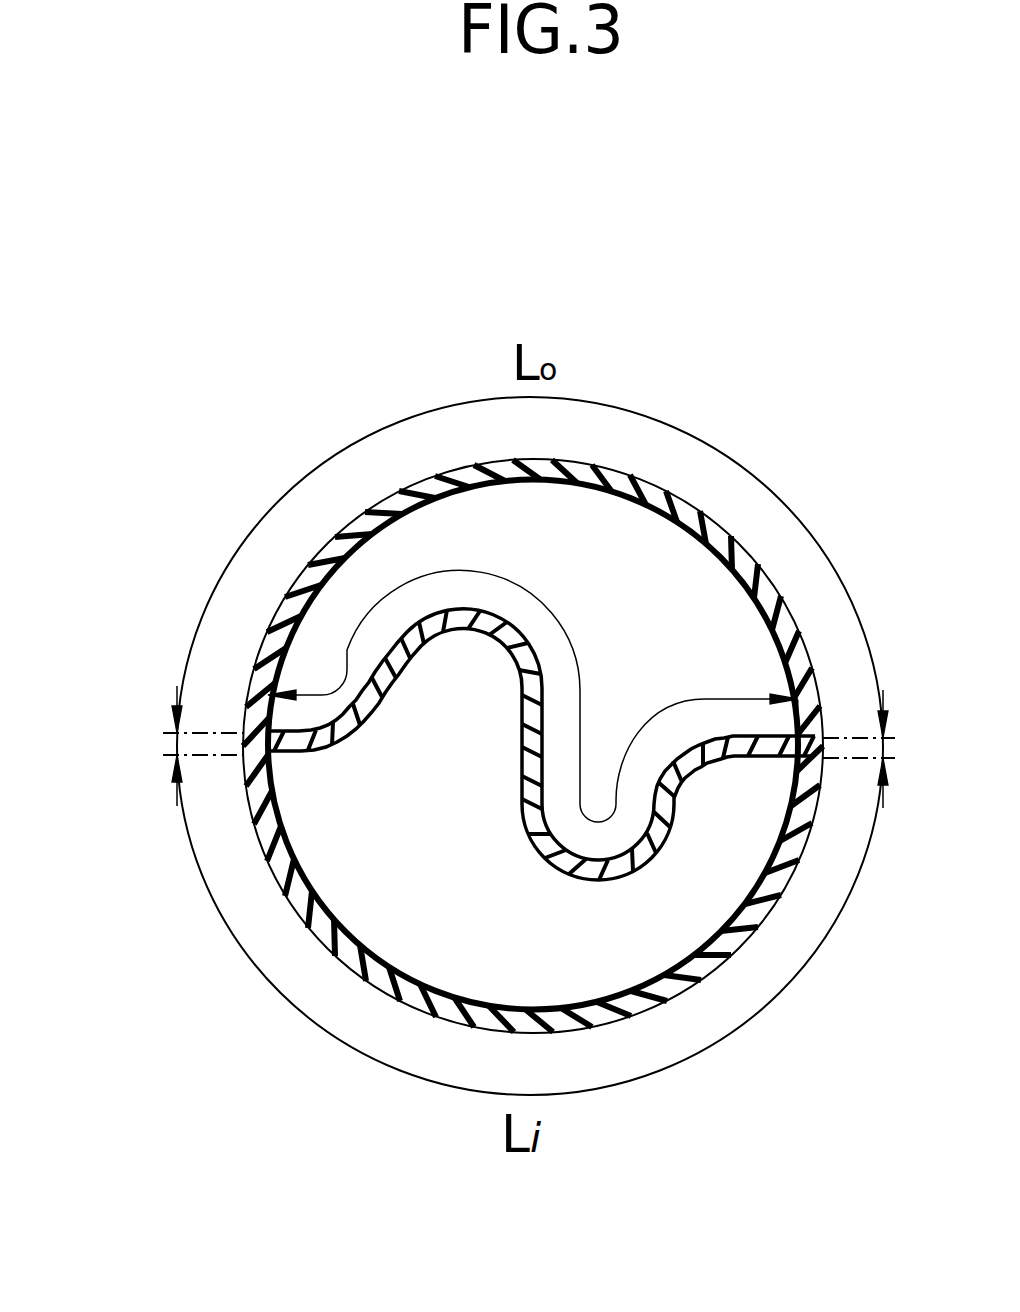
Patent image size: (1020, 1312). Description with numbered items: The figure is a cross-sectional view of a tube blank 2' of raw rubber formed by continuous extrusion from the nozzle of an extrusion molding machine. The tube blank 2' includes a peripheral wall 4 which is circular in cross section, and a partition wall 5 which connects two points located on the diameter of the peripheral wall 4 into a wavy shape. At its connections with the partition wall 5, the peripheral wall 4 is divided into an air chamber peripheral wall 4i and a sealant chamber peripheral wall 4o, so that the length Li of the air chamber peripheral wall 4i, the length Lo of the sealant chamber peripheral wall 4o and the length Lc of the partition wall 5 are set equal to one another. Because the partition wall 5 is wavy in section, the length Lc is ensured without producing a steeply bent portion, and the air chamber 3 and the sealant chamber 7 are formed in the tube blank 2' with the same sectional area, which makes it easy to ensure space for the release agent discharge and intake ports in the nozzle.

The tube blank 2' is at (530, 732).
The air chamber 3 is at (510, 940).
The peripheral wall 4 is at (432, 746).
The sealant chamber peripheral wall 4o is at (270, 620).
The air chamber peripheral wall 4i is at (88, 537).
The partition wall 5 is at (521, 798).
The sealant chamber 7 is at (650, 637).